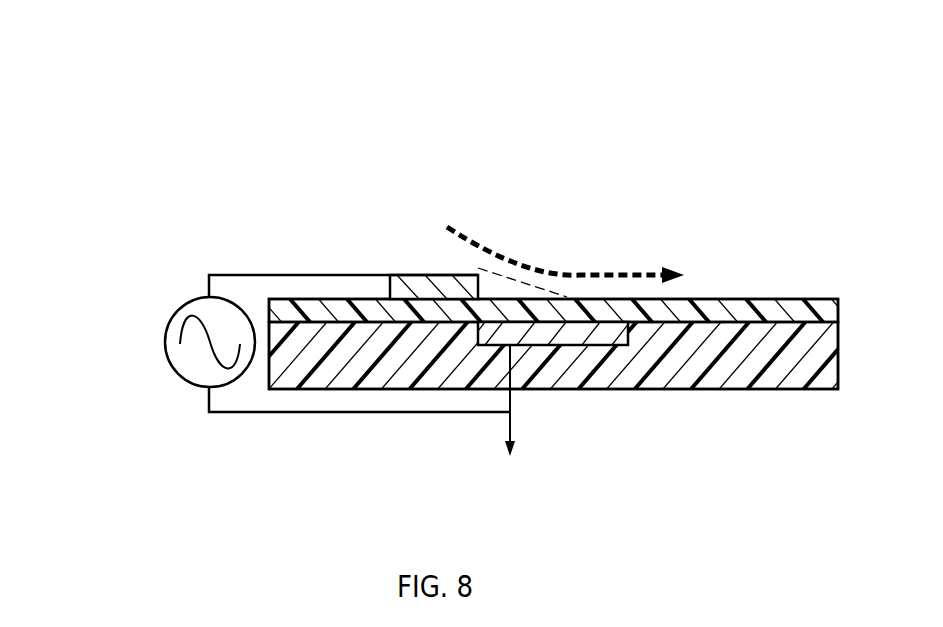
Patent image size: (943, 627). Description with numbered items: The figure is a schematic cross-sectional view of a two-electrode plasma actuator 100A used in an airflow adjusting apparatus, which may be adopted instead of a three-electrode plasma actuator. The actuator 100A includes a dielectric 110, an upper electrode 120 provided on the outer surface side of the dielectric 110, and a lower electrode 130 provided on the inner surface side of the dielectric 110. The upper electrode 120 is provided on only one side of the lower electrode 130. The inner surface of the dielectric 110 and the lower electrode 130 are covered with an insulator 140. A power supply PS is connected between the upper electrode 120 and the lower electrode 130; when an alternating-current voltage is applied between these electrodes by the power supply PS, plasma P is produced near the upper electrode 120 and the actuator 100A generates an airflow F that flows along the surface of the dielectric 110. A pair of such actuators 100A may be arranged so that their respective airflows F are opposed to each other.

The two-electrode plasma actuator 100A is at (326, 167).
The dielectric 110 is at (738, 298).
The upper electrode 120 is at (428, 275).
The lower electrode 130 is at (577, 340).
The insulator 140 is at (689, 390).
The power supply PS is at (178, 312).
The particle P is at (515, 275).
The airflow F is at (610, 275).